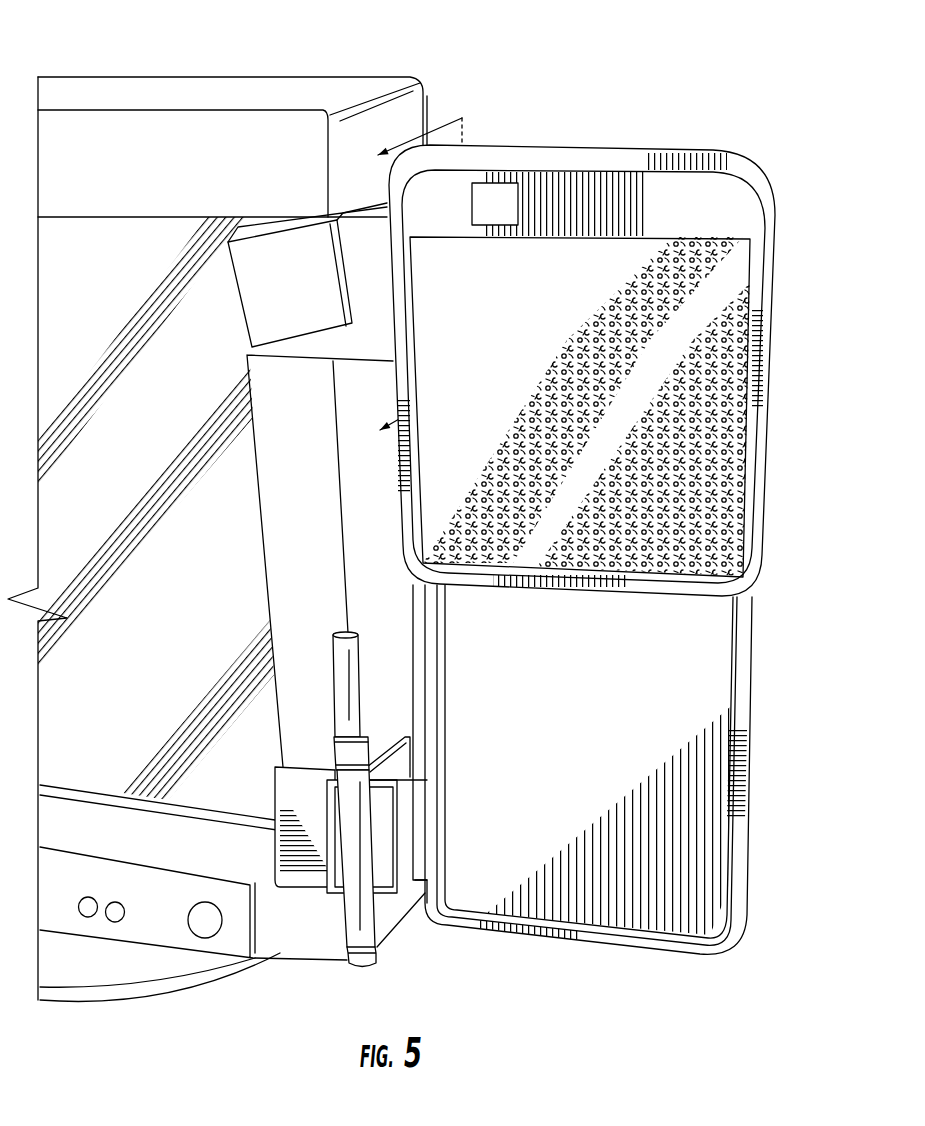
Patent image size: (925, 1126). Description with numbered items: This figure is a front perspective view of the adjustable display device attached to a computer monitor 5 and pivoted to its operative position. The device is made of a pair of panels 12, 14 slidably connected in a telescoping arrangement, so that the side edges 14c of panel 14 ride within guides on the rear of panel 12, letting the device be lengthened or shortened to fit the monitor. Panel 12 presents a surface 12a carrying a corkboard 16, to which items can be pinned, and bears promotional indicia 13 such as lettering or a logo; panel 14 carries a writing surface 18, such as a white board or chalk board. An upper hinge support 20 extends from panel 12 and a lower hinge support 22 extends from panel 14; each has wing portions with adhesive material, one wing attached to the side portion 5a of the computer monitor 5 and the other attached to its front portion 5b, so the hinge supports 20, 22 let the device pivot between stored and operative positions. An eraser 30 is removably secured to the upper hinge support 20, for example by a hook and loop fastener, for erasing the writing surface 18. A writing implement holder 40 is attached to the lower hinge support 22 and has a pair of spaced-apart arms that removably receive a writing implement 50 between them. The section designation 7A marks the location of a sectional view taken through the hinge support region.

The computer monitor 5 is at (172, 93).
The side portion of computer monitor 5a is at (372, 390).
The front portion of computer monitor 5b is at (273, 417).
The section line 7A is at (403, 284).
The panel 12 is at (757, 200).
The surface 12a is at (444, 219).
The promotional indicia 13 is at (608, 190).
The panel 14 is at (737, 802).
The side edges 14c is at (425, 640).
The corkboard 16 is at (692, 500).
The writing surface 18 is at (675, 802).
The upper hinge support 20 is at (316, 362).
The lower hinge support 22 is at (390, 775).
The eraser 30 is at (285, 340).
The writing implement holder 40 is at (385, 872).
The writing implement 50 is at (340, 713).